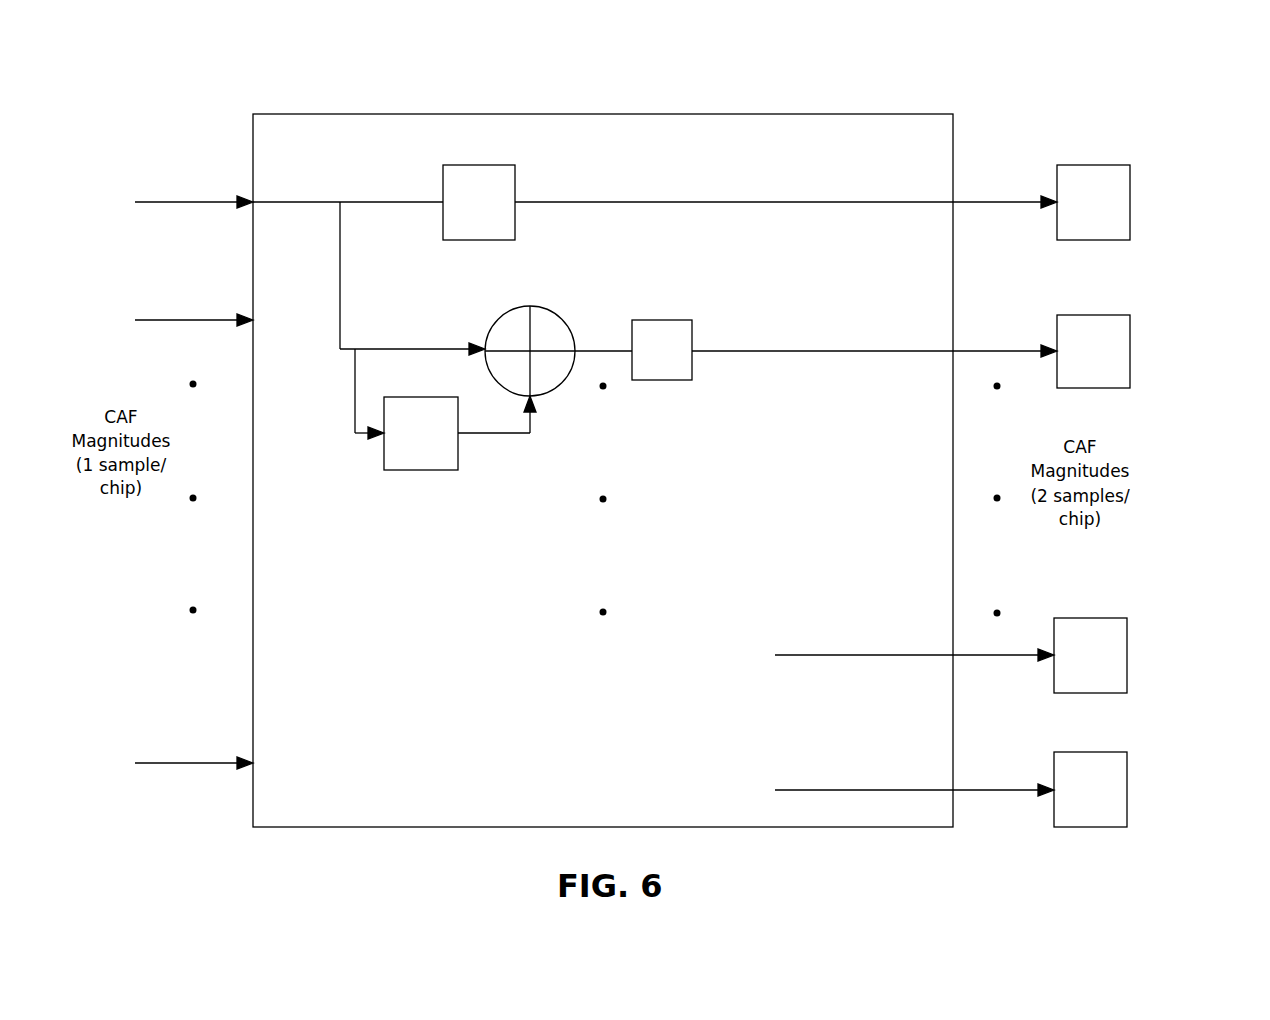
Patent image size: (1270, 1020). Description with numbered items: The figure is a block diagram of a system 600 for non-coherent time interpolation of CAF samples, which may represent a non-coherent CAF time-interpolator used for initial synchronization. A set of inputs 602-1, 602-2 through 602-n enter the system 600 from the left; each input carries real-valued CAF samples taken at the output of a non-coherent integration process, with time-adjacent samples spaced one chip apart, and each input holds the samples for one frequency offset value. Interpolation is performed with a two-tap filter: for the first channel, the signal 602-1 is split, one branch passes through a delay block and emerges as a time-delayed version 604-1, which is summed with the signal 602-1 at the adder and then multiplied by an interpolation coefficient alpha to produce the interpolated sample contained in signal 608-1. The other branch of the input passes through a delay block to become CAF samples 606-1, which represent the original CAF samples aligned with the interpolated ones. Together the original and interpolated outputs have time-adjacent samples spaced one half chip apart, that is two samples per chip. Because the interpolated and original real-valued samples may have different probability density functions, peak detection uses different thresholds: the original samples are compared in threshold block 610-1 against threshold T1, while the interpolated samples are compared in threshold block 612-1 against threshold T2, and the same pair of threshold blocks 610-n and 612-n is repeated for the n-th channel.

The system for non-coherent time interpolation 600 is at (1024, 106).
The input 602-1 is at (178, 202).
The input 602-2 is at (178, 320).
The input 602-n is at (176, 763).
The time-delayed version of signal 604-1 is at (487, 435).
The CAF samples 606-1 is at (976, 202).
The signal containing interpolated sample 608-1 is at (976, 351).
The threshold block 610-1 is at (1130, 201).
The threshold block 612-1 is at (1130, 350).
The threshold block 610-n is at (1127, 654).
The threshold block 612-n is at (1127, 789).